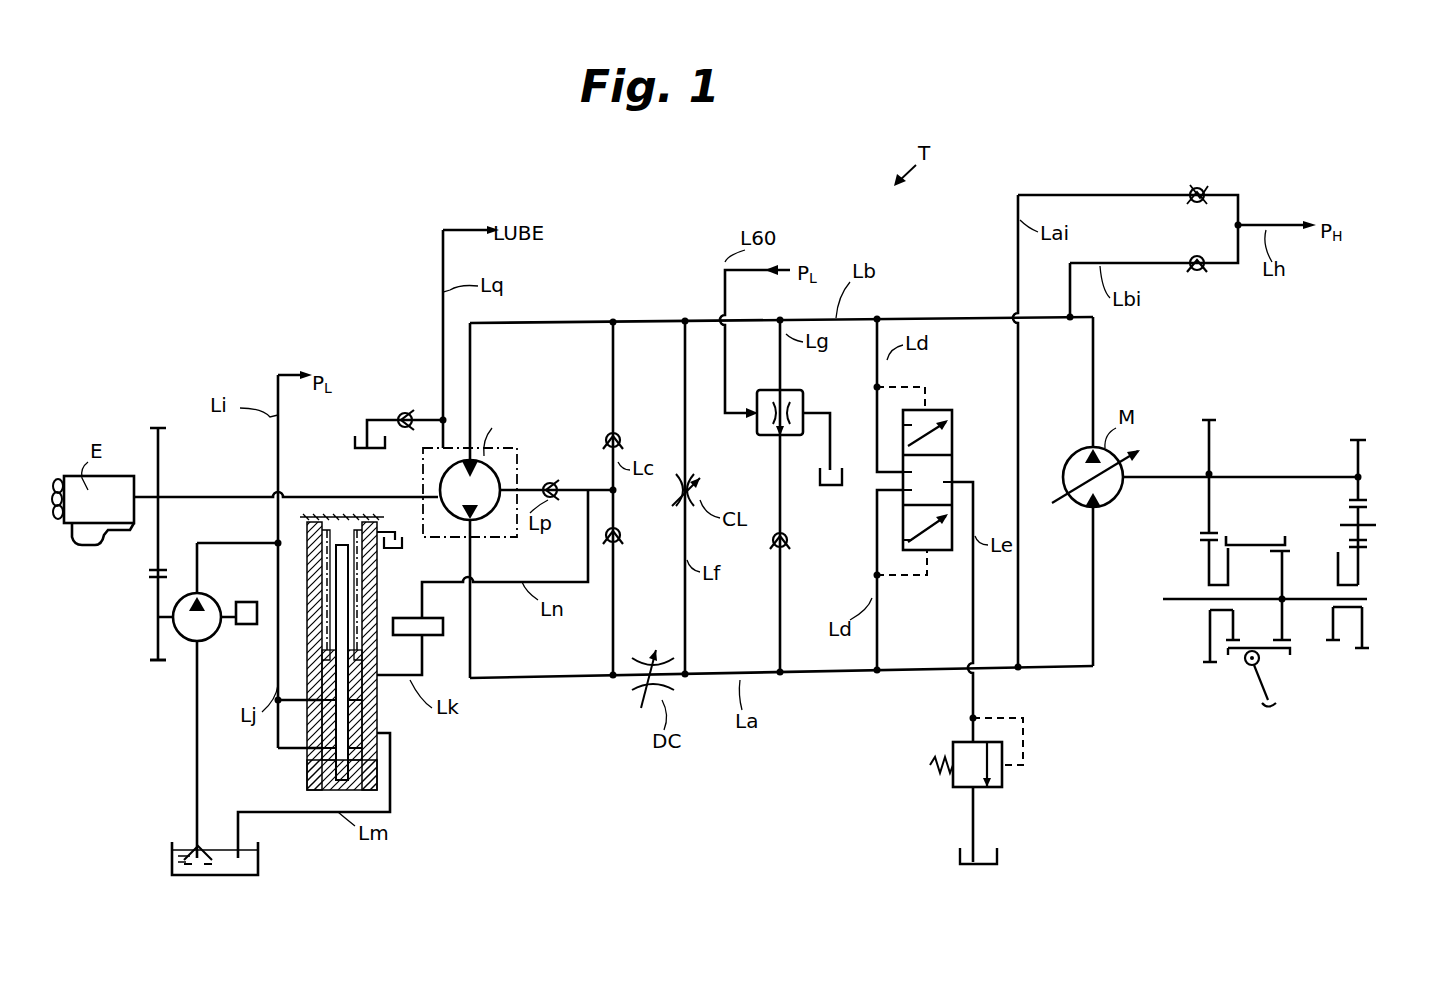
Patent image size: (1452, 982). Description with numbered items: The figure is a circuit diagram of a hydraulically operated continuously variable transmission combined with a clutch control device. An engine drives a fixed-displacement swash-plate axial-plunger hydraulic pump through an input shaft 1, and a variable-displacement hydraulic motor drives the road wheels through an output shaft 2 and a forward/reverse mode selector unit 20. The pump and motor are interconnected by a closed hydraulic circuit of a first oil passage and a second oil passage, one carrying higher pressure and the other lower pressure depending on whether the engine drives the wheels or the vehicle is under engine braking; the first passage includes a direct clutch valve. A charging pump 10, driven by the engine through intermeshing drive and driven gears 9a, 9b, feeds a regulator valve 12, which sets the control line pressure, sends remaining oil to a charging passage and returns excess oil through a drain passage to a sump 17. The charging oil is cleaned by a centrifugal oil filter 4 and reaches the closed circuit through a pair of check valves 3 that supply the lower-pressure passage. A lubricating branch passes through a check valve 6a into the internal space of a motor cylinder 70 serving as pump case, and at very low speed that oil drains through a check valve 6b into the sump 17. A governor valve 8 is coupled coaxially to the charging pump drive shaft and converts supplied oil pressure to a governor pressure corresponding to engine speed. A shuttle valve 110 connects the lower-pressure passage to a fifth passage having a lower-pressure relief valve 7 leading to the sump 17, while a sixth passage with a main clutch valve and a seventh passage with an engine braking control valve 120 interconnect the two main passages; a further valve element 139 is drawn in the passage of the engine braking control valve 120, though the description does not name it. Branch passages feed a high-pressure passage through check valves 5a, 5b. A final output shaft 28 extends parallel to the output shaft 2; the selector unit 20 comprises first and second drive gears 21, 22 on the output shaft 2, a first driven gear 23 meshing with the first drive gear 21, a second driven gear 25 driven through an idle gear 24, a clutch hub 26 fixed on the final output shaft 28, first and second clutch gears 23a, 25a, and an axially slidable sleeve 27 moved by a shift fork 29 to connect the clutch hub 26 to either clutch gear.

The input shaft 1 is at (200, 497).
The output shaft 2 is at (1156, 477).
The check valves 3 is at (620, 434).
The centrifugal oil filter 4 is at (425, 640).
The check valve 5a is at (1196, 186).
The check valve 5b is at (1194, 272).
The check valve 6a is at (552, 482).
The check valve 6b is at (408, 410).
The lower-pressure relief valve 7 is at (1002, 776).
The governor valve 8 is at (246, 626).
The drive gear 9a is at (148, 573).
The driven gear 9b is at (152, 660).
The charging pump 10 is at (203, 600).
The regulator valve 12 is at (393, 712).
The sump 17 is at (259, 868).
The forward/reverse mode selector unit 20 is at (1322, 398).
The first drive gear 21 is at (1212, 426).
The second drive gear 22 is at (1362, 448).
The first driven gear 23 is at (1205, 548).
The first clutch gear 23a is at (1228, 552).
The idle gear 24 is at (1368, 508).
The second driven gear 25 is at (1370, 625).
The second clutch gear 25a is at (1336, 550).
The clutch hub 26 is at (1286, 626).
The sleeve 27 is at (1245, 664).
The final output shaft 28 is at (1163, 597).
The shift fork 29 is at (1278, 704).
The motor cylinder 70 is at (520, 456).
The shuttle valve 110 is at (948, 410).
The engine braking control valve 120 is at (800, 392).
The check valve 139 is at (790, 540).